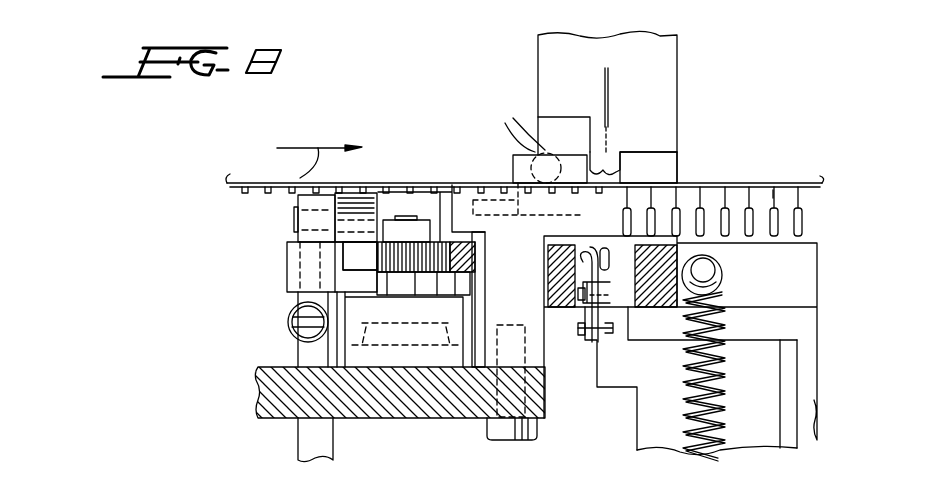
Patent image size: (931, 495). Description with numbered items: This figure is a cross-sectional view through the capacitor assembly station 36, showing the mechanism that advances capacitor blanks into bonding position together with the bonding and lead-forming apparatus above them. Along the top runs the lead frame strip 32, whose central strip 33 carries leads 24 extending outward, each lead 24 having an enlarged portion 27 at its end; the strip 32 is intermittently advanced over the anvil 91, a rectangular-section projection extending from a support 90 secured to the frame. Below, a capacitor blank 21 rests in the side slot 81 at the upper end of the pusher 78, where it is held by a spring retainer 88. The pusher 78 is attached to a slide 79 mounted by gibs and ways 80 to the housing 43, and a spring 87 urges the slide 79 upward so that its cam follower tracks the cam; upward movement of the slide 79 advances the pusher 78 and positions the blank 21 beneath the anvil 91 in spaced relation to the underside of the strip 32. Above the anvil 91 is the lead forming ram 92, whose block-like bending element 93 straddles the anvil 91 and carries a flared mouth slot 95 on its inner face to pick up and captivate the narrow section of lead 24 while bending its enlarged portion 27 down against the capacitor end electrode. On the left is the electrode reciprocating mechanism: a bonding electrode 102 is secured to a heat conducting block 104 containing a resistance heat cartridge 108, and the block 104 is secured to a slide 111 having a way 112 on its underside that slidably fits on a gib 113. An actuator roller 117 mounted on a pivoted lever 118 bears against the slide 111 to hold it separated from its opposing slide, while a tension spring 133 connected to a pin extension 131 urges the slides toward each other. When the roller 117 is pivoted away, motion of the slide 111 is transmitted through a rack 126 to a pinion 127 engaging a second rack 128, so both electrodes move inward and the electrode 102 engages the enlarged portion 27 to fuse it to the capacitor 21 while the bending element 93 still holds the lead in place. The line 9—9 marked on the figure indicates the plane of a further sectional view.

The line 9—9 section indicator 9 is at (608, 90).
The capacitor blank 21 is at (801, 235).
The lead 24 is at (775, 197).
The enlarged portion of lead 27 is at (263, 178).
The lead frame strip 32 is at (372, 180).
The central strip 33 is at (425, 180).
The capacitor assembly station 36 is at (480, 83).
The housing 43 is at (270, 397).
The pusher 78 is at (620, 312).
The slide 79 is at (763, 362).
The gibs and ways 80 is at (790, 407).
The side slot 81 is at (604, 272).
The spring 87 is at (683, 416).
The spring retainer 88 is at (579, 294).
The support 90 is at (518, 203).
The anvil 91 is at (618, 168).
The lead forming ram 92 is at (665, 53).
The bending element 93 is at (643, 150).
The flared mouth slot 95 is at (612, 153).
The bonding electrode 102 is at (648, 172).
The heat conducting block 104 is at (515, 177).
The resistance heat cartridge 108 is at (548, 170).
The slide 111 is at (287, 275).
The way 112 is at (390, 350).
The gib 113 is at (422, 340).
The actuator roller 117 is at (336, 213).
The lever 118 is at (335, 229).
The rack 126 is at (347, 250).
The pinion 127 is at (400, 216).
The rack 128 is at (467, 256).
The pin extension 131 is at (298, 296).
The tension spring 133 is at (292, 333).